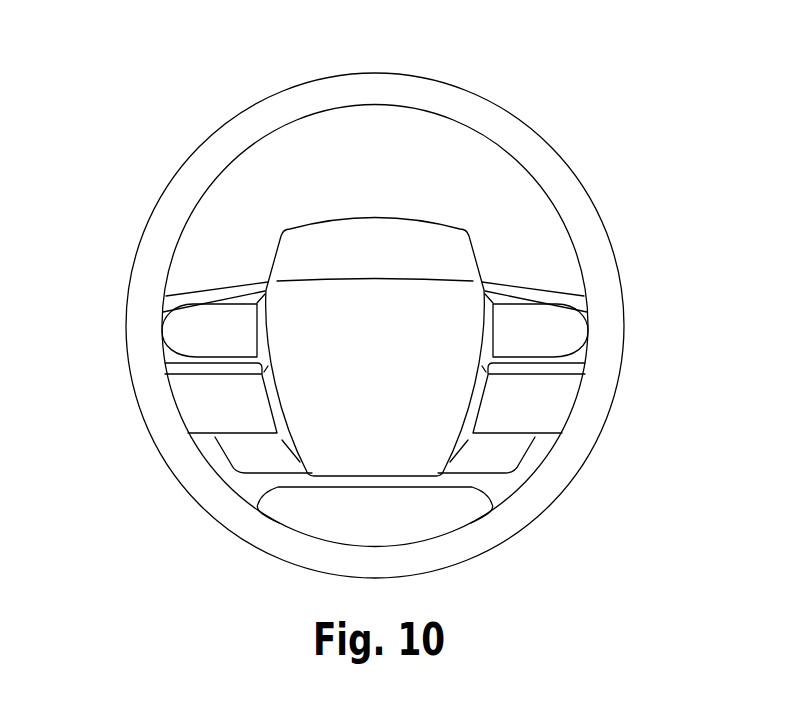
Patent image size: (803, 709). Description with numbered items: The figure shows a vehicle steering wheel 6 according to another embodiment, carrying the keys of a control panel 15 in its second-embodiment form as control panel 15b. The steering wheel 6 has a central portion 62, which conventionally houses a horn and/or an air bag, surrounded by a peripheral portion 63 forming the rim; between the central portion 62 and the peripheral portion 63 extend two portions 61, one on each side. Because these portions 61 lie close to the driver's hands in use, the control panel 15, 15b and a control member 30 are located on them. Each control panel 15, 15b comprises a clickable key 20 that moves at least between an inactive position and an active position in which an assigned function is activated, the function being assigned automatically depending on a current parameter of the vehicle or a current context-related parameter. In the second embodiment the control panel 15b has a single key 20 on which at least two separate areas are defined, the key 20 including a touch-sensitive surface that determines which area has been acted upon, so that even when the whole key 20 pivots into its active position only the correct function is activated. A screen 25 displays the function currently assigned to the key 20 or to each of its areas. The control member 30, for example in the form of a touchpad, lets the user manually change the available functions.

The vehicle steering wheel 6 is at (364, 297).
The peripheral portion 63 is at (441, 100).
The central portion 62 is at (367, 238).
The portion extending between the central portion and the peripheral portion 61 is at (217, 290).
The control member 30 is at (177, 323).
The key 20 is at (425, 448).
The screen 25 is at (590, 402).
The control panel 15 is at (317, 469).
The control panel 15b is at (503, 373).